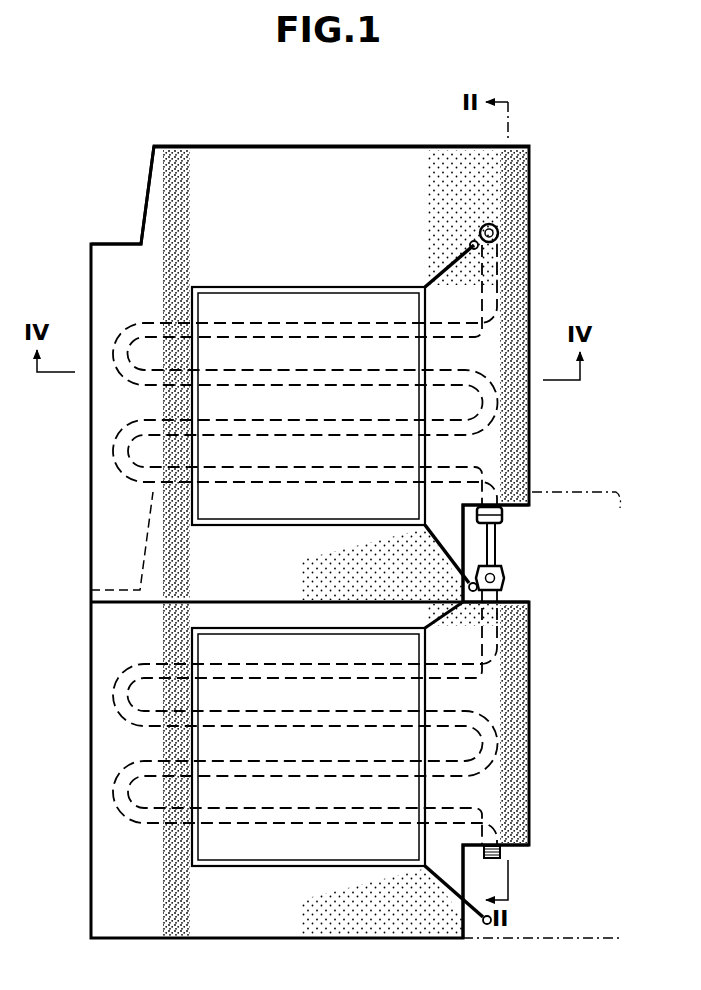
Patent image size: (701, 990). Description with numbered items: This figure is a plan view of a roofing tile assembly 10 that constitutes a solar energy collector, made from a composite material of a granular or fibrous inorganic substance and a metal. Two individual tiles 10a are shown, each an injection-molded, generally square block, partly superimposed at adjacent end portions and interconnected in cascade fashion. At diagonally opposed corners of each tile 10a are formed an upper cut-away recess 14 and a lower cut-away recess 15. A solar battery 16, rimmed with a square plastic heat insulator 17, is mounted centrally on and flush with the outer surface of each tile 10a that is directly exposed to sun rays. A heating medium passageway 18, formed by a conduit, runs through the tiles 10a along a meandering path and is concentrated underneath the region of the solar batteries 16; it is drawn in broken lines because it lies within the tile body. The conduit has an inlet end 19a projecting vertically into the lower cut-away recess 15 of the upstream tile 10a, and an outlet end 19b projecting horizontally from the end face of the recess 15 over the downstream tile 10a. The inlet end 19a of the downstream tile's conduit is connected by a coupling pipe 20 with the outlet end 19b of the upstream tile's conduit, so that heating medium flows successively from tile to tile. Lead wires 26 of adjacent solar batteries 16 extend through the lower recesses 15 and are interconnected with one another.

The roofing tile assembly 10 is at (75, 263).
The tile 10a is at (361, 146).
The upper cut-away recess 14 is at (104, 244).
The lower cut-away recess 15 is at (528, 512).
The solar battery 16 is at (405, 312).
The heat insulator 17 is at (192, 316).
The heating medium passageway 18 is at (495, 408).
The inlet end 19a is at (499, 233).
The outlet end 19b is at (490, 505).
The coupling pipe 20 is at (497, 540).
The lead wires 26 is at (476, 268).